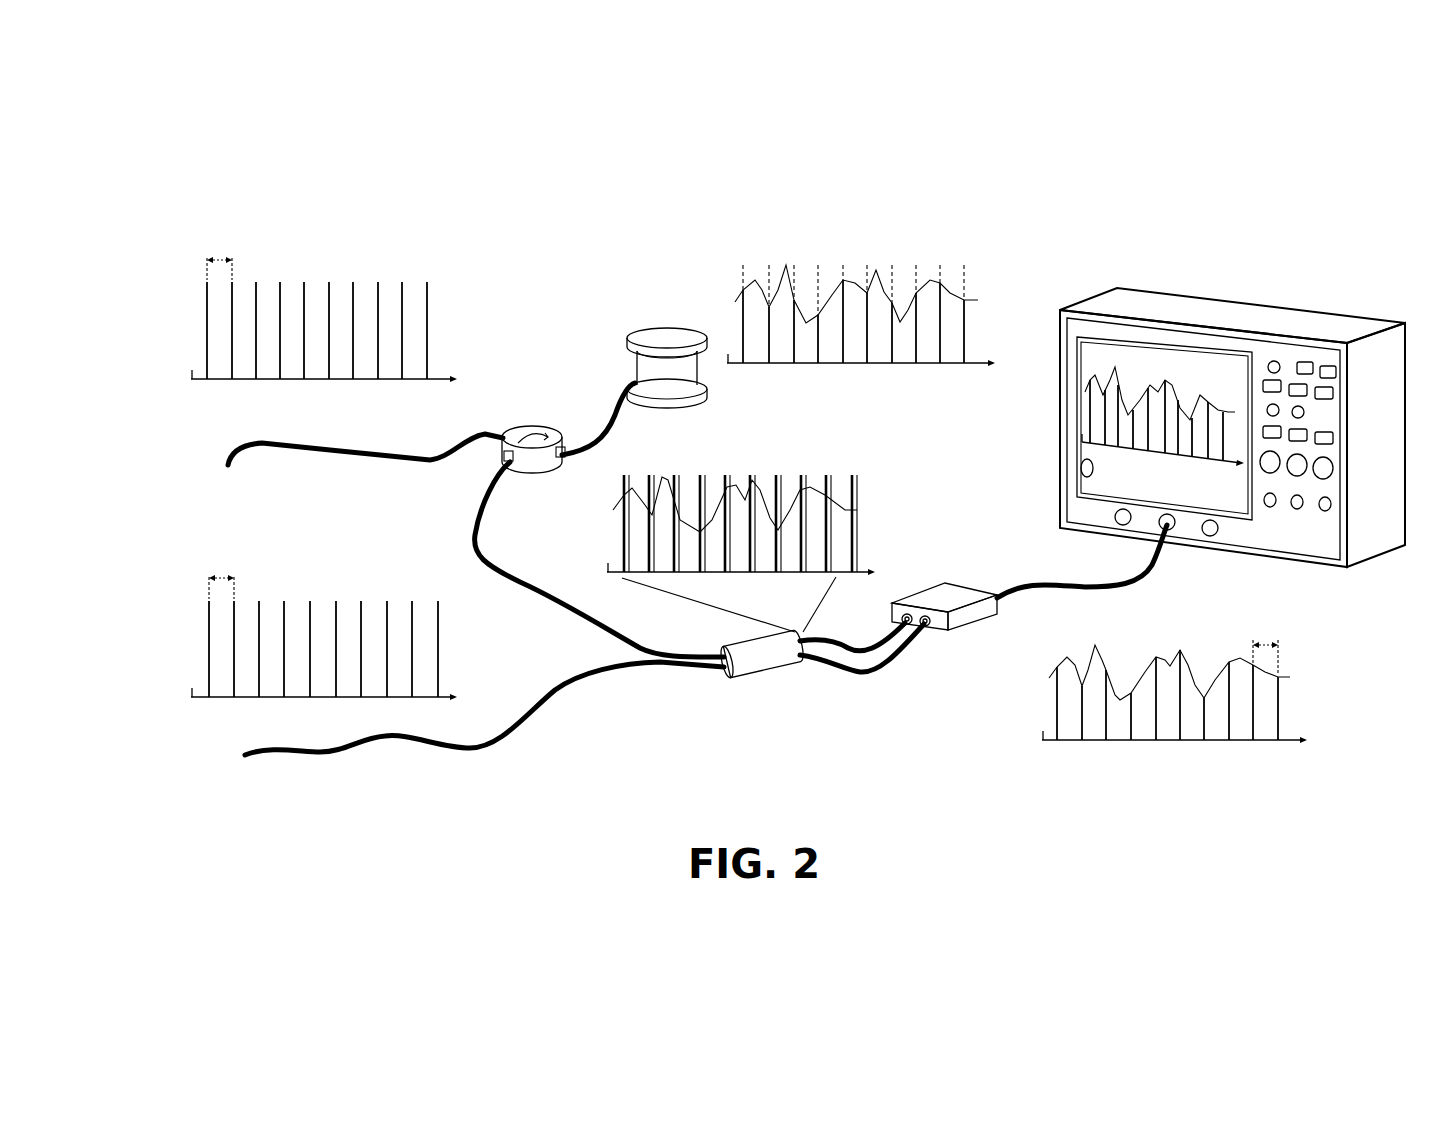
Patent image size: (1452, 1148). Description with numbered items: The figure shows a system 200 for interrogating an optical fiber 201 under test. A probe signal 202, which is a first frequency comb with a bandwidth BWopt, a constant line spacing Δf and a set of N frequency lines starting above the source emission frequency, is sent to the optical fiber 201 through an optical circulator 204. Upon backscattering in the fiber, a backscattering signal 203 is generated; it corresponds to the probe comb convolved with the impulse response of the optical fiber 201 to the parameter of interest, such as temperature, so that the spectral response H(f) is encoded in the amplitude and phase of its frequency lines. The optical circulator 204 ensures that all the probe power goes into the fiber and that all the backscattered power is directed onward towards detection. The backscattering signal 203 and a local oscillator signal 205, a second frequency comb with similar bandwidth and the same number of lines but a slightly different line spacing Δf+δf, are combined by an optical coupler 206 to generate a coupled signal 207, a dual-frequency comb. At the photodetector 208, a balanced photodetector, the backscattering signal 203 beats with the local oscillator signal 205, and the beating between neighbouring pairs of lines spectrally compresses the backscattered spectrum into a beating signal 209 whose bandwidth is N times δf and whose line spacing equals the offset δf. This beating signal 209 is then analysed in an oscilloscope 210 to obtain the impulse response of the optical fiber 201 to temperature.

The system for interrogating an optical fiber 200 is at (1330, 188).
The optical fiber under test 201 is at (657, 332).
The probe signal 202 is at (158, 282).
The backscattering signal 203 is at (946, 243).
The optical circulator 204 is at (530, 426).
The local oscillator signal 205 is at (163, 582).
The optical coupler 206 is at (790, 663).
The coupled signal 207 is at (800, 461).
The photodetector 208 is at (943, 597).
The beating signal 209 is at (1136, 352).
The oscilloscope 210 is at (1338, 330).